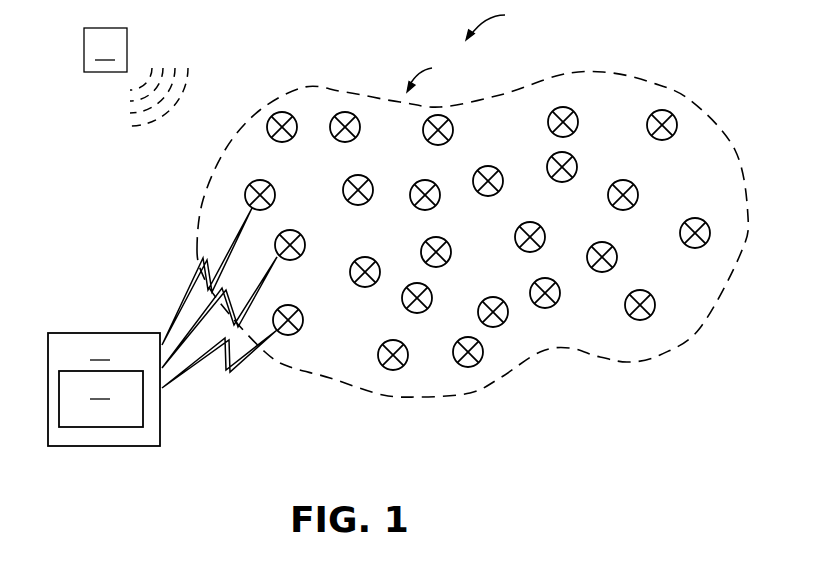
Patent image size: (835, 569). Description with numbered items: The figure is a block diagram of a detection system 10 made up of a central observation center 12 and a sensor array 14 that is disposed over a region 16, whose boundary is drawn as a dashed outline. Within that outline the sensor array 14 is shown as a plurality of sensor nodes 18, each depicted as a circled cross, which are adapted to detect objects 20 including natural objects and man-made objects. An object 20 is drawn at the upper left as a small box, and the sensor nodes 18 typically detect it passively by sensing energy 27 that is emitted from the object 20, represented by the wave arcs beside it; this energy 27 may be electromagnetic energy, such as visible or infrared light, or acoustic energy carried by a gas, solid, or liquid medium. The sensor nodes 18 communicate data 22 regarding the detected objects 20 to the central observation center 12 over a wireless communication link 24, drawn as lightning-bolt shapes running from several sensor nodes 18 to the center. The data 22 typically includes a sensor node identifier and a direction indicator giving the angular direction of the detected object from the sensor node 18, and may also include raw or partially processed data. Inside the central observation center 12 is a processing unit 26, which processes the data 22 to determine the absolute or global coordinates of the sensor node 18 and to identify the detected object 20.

The detection system 10 is at (498, 22).
The central observation center 12 is at (104, 389).
The sensor array 14 is at (434, 76).
The region 16 is at (309, 85).
The sensor nodes 18 is at (264, 181).
The objects 20 is at (105, 50).
The data 22 is at (232, 362).
The wireless communication link 24 is at (217, 377).
The processing unit 26 is at (101, 399).
The energy 27 is at (185, 100).